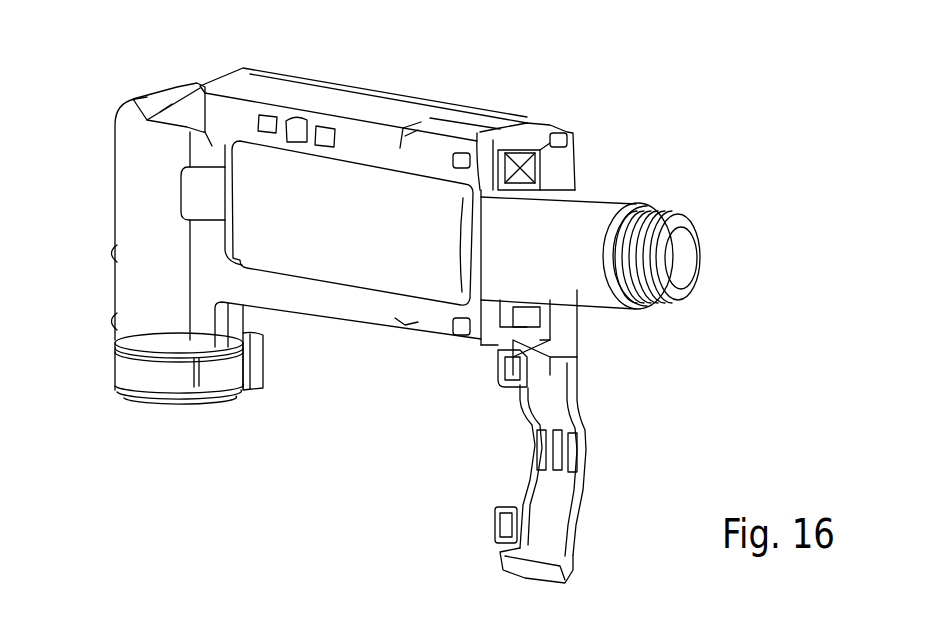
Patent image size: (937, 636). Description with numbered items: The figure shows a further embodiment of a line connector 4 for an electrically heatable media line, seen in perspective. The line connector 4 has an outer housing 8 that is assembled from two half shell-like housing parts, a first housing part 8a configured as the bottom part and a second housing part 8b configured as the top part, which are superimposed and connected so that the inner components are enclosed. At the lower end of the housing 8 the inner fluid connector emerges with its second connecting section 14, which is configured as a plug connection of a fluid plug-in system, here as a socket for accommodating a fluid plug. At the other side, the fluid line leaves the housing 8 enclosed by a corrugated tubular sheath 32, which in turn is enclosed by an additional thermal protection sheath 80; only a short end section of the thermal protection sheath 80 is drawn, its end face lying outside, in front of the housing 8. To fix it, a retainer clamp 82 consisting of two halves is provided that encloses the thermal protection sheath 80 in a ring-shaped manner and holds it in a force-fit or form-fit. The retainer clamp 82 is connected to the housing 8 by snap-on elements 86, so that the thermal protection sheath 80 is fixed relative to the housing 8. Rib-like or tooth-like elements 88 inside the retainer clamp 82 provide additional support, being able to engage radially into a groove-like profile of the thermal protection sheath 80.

The line connector 4 is at (166, 84).
The housing 8 is at (108, 102).
The first housing part 8a is at (346, 90).
The second housing part 8b is at (285, 96).
The second connecting section 14 is at (125, 408).
The sheath 32 is at (650, 237).
The thermal protection sheath 80 is at (590, 221).
The retainer clamp 82 is at (574, 133).
The snap-on elements 86 is at (465, 152).
The rib-like or tooth-like elements 88 is at (573, 456).